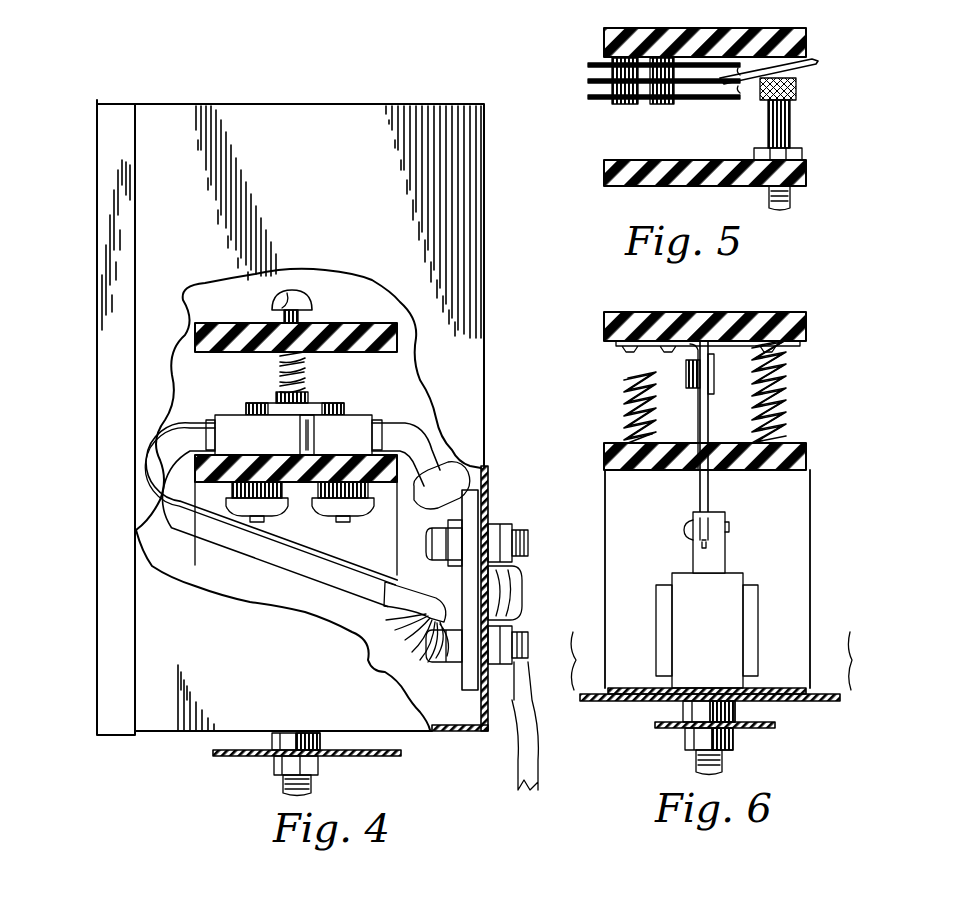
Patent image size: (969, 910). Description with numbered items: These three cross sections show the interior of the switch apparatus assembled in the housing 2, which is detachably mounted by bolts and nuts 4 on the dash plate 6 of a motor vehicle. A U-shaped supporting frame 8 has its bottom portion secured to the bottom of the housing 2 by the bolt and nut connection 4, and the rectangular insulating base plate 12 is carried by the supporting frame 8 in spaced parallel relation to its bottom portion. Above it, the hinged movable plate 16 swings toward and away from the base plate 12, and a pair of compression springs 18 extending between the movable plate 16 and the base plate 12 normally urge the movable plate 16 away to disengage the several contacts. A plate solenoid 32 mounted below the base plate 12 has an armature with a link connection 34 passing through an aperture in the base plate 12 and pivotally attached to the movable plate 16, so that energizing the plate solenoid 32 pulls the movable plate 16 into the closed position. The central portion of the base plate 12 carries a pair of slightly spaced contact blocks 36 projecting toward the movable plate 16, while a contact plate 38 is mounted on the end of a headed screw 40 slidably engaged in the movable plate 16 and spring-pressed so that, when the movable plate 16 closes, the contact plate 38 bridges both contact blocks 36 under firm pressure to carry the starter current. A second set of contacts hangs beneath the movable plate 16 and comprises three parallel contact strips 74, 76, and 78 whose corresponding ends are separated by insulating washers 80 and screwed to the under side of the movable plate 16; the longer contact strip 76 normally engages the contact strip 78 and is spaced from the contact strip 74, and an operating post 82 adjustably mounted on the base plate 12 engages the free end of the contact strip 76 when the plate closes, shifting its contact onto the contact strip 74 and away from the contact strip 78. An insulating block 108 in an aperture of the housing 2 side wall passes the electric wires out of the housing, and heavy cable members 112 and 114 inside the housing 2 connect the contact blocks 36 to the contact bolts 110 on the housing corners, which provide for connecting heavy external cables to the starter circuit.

In FIG. 4, the housing 2 is at (420, 720).
In FIG. 6, the housing 2 is at (802, 702).
In FIG. 4, the bolts and nuts 4 is at (322, 752).
In FIG. 6, the bolts and nuts 4 is at (734, 728).
In FIG. 4, the dash plate 6 is at (218, 755).
In FIG. 6, the dash plate 6 is at (666, 728).
In FIG. 4, the supporting frame 8 is at (258, 594).
In FIG. 6, the supporting frame 8 is at (796, 536).
In FIG. 4, the base plate 12 is at (302, 483).
In FIG. 5, the base plate 12 is at (700, 186).
In FIG. 6, the base plate 12 is at (798, 446).
In FIG. 4, the movable plate 16 is at (325, 324).
In FIG. 5, the movable plate 16 is at (734, 30).
In FIG. 6, the movable plate 16 is at (710, 316).
In FIG. 6, the compression springs 18 is at (622, 412).
In FIG. 6, the plate solenoid 32 is at (752, 596).
In FIG. 6, the link connection 34 is at (710, 520).
In FIG. 4, the contact blocks 36 is at (355, 430).
In FIG. 4, the contact plate 38 is at (268, 398).
In FIG. 4, the screw 40 is at (283, 312).
In FIG. 5, the contact strip 74 is at (590, 64).
In FIG. 5, the contact strip 76 is at (590, 81).
In FIG. 5, the contact strip 78 is at (590, 97).
In FIG. 5, the insulating washers 80 is at (630, 76).
In FIG. 5, the operating post 82 is at (768, 134).
In FIG. 4, the insulating block 108 is at (472, 692).
In FIG. 4, the bolts 110 is at (513, 548).
In FIG. 4, the cable member 112 is at (412, 448).
In FIG. 4, the cable member 114 is at (334, 574).